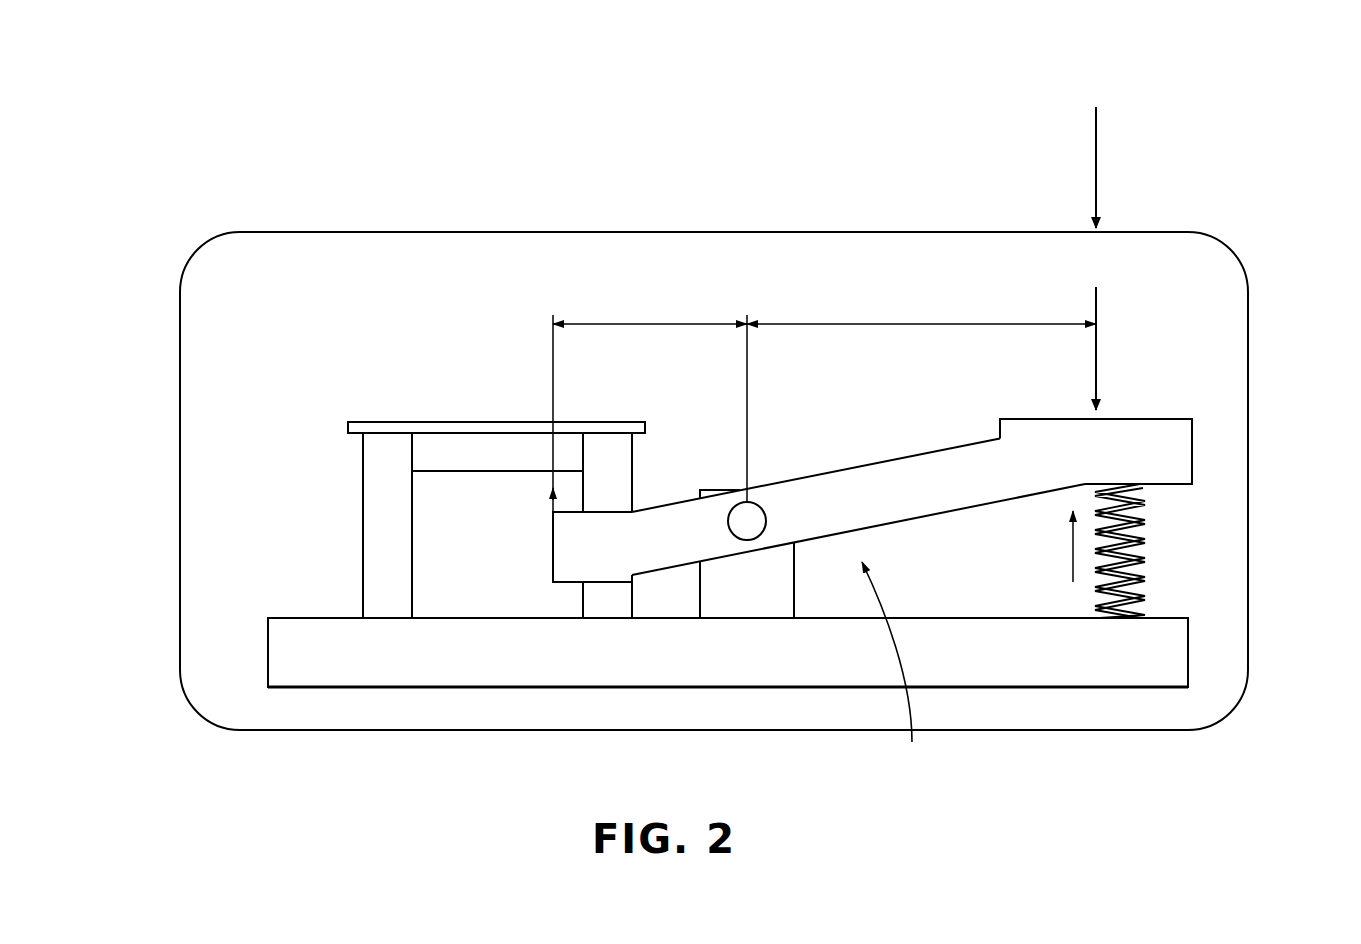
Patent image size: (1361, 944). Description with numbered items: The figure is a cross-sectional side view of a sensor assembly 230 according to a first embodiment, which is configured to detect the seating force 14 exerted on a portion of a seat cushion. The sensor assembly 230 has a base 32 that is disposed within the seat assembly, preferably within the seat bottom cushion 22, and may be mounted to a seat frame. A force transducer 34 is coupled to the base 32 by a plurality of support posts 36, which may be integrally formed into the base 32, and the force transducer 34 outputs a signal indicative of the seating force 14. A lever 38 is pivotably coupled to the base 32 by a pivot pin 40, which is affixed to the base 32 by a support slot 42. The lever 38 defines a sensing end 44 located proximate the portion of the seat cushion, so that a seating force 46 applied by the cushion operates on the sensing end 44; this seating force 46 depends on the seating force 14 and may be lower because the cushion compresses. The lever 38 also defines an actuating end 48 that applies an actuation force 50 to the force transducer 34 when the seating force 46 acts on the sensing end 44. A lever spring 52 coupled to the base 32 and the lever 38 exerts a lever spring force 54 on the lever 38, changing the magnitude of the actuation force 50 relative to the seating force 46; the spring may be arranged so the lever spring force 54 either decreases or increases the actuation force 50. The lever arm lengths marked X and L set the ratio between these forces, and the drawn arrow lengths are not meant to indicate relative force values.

The seating force 14 is at (1095, 148).
The seat bottom cushion 22 is at (322, 233).
The sensor assembly 230 is at (803, 298).
The base 32 is at (267, 652).
The force transducer 34 is at (458, 453).
The support posts 36 is at (378, 512).
The lever 38 is at (858, 604).
The pivot pin 40 is at (740, 525).
The support slot 42 is at (760, 605).
The sensing end 44 is at (1172, 420).
The seating force 46 is at (1096, 307).
The actuating end 48 is at (553, 550).
The actuation force 50 is at (550, 502).
The lever spring 52 is at (1137, 533).
The lever spring force 54 is at (1070, 567).